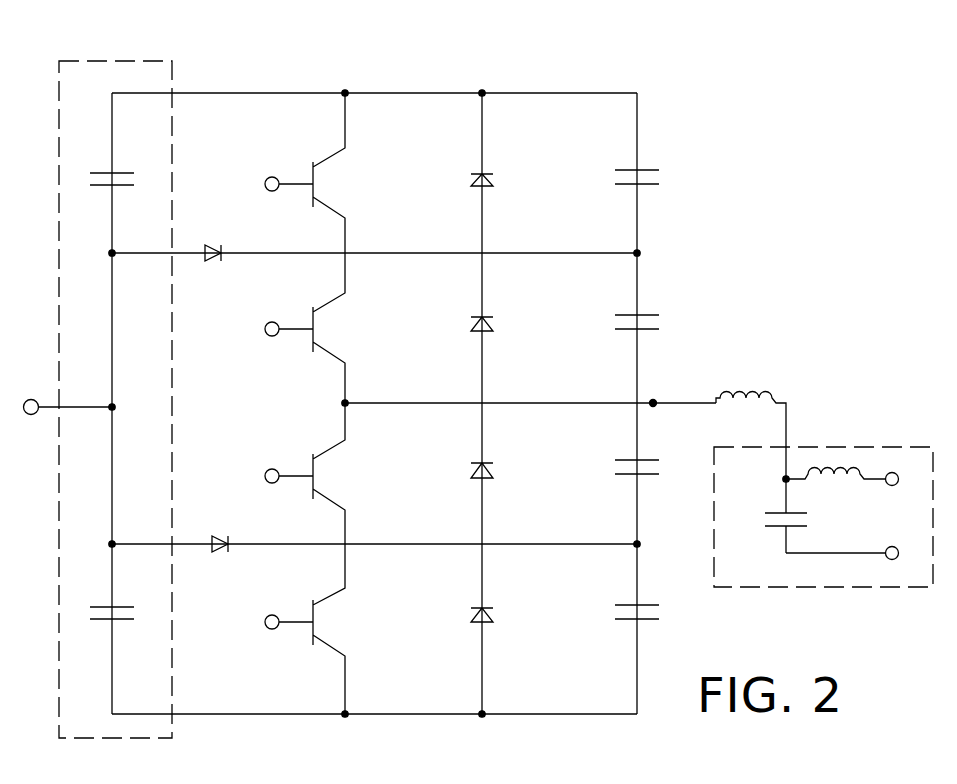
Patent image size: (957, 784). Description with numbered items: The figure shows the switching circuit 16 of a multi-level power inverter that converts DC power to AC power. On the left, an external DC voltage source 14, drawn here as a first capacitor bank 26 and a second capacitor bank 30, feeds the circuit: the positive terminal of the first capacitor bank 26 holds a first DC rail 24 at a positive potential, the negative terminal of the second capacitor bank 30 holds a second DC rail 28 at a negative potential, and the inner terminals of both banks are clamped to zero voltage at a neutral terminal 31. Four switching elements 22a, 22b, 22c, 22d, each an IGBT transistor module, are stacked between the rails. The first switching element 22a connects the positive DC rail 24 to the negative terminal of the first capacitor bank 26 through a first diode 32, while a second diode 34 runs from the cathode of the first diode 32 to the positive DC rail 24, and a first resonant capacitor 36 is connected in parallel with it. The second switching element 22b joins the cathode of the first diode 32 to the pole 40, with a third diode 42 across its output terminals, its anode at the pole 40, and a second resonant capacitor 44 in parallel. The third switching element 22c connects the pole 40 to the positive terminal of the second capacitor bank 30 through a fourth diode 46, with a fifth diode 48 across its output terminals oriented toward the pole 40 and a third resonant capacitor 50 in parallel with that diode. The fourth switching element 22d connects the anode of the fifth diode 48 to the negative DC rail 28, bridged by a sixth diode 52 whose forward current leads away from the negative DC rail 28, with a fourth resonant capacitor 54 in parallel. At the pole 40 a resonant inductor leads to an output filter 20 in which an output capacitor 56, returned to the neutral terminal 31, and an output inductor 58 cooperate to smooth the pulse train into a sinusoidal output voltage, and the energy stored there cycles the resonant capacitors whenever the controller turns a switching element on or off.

The external DC voltage source 14 is at (148, 62).
The switching circuit 16 is at (394, 80).
The output filter 20 is at (765, 588).
The first switching element 22a is at (299, 174).
The second switching element 22b is at (301, 318).
The third switching element 22c is at (294, 458).
The fourth switching element 22d is at (285, 606).
The first DC rail 24 is at (268, 93).
The first capacitor bank 26 is at (118, 171).
The second DC rail 28 is at (298, 718).
The second capacitor bank 30 is at (119, 605).
The neutral terminal 31 is at (50, 405).
The first diode 32 is at (210, 248).
The second diode 34 is at (477, 179).
The first resonant capacitor 36 is at (647, 170).
The pole 40 is at (570, 402).
The third diode 42 is at (476, 326).
The second resonant capacitor 44 is at (647, 314).
The fourth diode 46 is at (214, 538).
The fifth diode 48 is at (476, 472).
The third resonant capacitor 50 is at (647, 460).
The sixth diode 52 is at (477, 616).
The fourth resonant capacitor 54 is at (647, 602).
The output capacitor 56 is at (778, 531).
The output inductor 58 is at (737, 397).